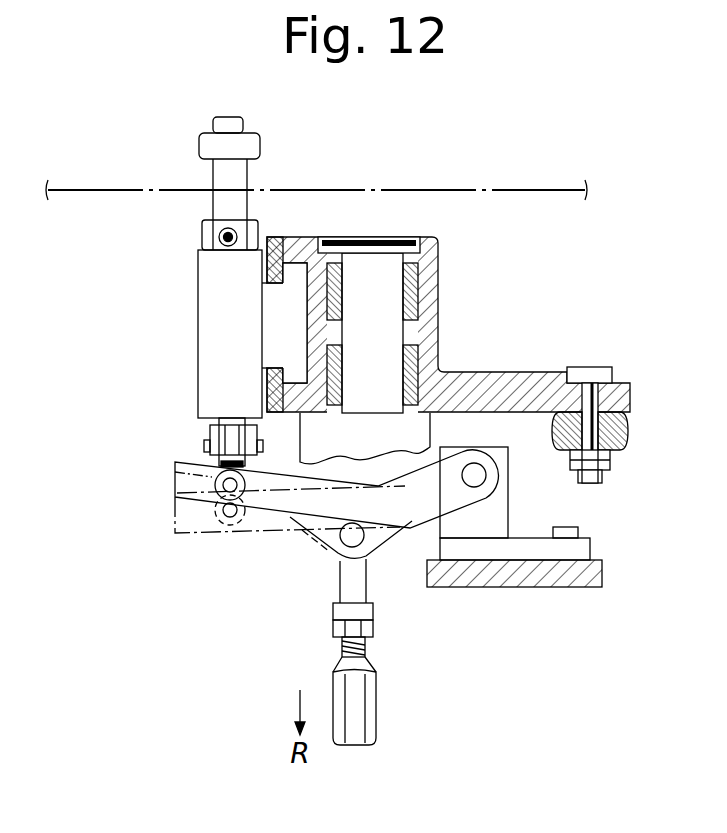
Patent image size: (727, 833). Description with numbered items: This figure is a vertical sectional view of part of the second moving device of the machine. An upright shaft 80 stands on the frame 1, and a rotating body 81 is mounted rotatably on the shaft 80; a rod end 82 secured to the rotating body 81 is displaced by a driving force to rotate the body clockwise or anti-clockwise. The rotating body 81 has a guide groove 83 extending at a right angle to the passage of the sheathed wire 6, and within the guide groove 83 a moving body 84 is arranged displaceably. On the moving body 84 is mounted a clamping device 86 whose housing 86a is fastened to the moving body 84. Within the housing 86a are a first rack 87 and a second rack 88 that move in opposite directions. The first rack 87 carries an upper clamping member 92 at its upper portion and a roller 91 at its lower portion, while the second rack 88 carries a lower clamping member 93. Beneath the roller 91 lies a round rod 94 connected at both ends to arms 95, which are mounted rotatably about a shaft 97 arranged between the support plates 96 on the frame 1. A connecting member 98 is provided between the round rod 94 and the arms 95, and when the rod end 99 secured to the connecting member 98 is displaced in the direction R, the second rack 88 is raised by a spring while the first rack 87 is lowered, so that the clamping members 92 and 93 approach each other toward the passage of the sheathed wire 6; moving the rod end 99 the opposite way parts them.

The frame 1 is at (597, 560).
The sheathed wire 6 is at (462, 190).
The shaft 80 is at (377, 267).
The rotating body 81 is at (446, 333).
The rod end 82 is at (628, 428).
The guide groove 83 is at (307, 333).
The moving body 84 is at (287, 348).
The clamping device 86 is at (198, 133).
The housing 86a is at (206, 334).
The first rack 87 is at (222, 177).
The second rack 88 is at (242, 229).
The roller 91 is at (235, 444).
The upper clamping member 92 is at (248, 147).
The lower clamping member 93 is at (205, 233).
The round rod 94 is at (177, 470).
The arms 95 is at (266, 503).
The support plate 96 is at (495, 513).
The shaft 97 is at (478, 476).
The connecting member 98 is at (347, 548).
The rod end 99 is at (372, 688).